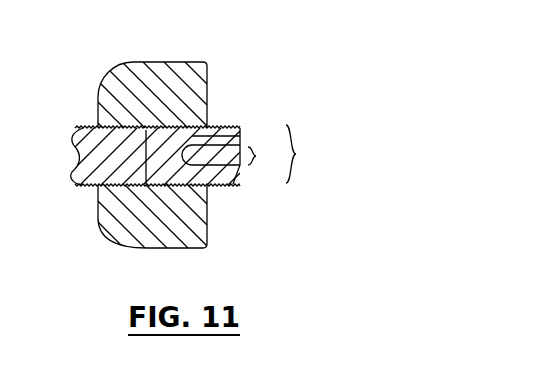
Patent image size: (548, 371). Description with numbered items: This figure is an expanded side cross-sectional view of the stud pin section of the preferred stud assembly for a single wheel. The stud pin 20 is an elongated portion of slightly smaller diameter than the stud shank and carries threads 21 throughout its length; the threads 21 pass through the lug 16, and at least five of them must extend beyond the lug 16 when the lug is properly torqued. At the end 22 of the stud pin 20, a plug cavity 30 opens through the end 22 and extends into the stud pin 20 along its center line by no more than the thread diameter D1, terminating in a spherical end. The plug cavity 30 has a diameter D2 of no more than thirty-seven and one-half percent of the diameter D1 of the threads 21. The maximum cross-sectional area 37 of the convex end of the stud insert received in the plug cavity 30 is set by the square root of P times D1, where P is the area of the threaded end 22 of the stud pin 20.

The lug 16 is at (206, 68).
The stud pin 20 is at (68, 146).
The threads 21 is at (84, 127).
The end of the stud pin 22 is at (244, 134).
The plug cavity 30 is at (224, 186).
The maximum cross-sectional area of the convex end of the stud insert 37 is at (236, 184).